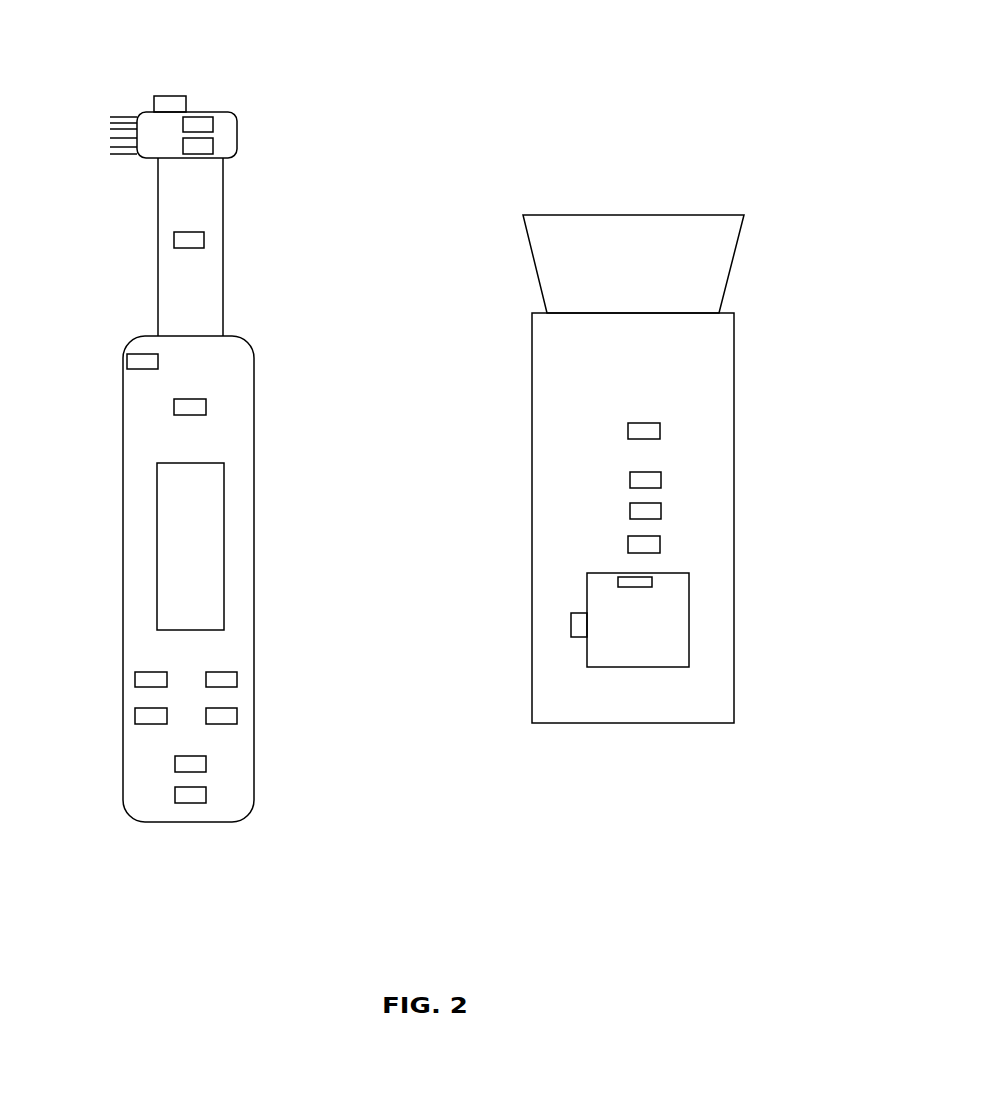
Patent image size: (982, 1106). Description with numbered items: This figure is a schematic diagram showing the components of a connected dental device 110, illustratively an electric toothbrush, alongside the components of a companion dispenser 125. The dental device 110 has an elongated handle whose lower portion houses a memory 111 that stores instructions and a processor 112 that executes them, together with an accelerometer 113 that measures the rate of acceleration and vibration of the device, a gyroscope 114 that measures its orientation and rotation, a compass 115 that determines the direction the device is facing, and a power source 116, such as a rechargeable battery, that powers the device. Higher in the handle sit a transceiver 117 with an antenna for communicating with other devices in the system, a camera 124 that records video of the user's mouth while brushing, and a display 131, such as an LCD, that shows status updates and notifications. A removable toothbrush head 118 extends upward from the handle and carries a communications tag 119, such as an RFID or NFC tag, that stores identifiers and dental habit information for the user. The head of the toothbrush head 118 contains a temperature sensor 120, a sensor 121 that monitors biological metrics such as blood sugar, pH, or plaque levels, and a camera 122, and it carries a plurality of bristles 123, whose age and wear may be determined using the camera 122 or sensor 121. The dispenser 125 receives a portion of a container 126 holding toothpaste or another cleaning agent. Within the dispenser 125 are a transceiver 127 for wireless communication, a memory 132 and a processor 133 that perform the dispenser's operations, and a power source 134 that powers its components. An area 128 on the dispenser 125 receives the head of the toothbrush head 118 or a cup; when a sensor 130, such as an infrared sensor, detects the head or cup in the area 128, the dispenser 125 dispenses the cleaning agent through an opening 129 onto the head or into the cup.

The dental device 110 is at (254, 350).
The memory 111 is at (206, 795).
The processor 112 is at (206, 764).
The accelerometer 113 is at (237, 716).
The gyroscope 114 is at (237, 679).
The compass 115 is at (135, 716).
The power source 116 is at (135, 680).
The transceiver 117 is at (174, 407).
The toothbrush head 118 is at (223, 283).
The communications tag 119 is at (204, 240).
The temperature sensor 120 is at (213, 146).
The sensor 121 is at (213, 125).
The camera 122 is at (169, 96).
The bristles 123 is at (122, 117).
The camera 124 is at (142, 354).
The dispenser 125 is at (734, 666).
The container 126 is at (738, 238).
The transceiver 127 is at (660, 430).
The area 128 is at (689, 616).
The opening 129 is at (652, 582).
The sensor 130 is at (571, 622).
The display 131 is at (224, 547).
The memory 132 is at (661, 480).
The processor 133 is at (661, 511).
The power source 134 is at (660, 544).